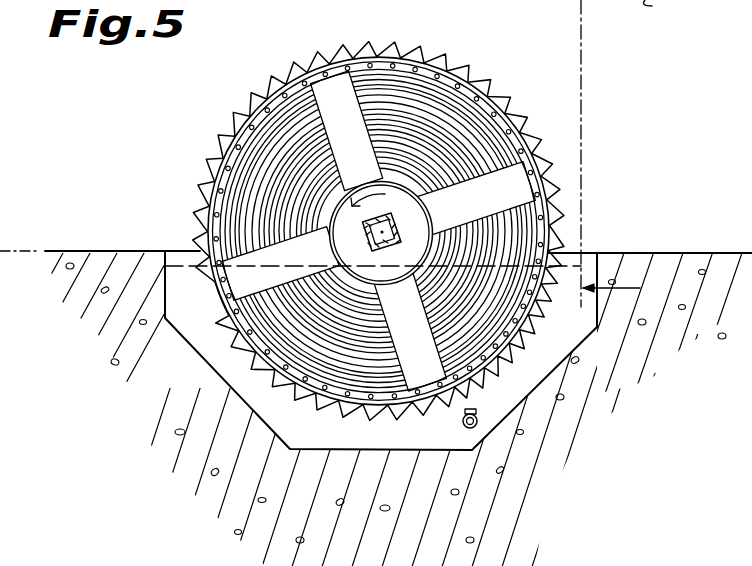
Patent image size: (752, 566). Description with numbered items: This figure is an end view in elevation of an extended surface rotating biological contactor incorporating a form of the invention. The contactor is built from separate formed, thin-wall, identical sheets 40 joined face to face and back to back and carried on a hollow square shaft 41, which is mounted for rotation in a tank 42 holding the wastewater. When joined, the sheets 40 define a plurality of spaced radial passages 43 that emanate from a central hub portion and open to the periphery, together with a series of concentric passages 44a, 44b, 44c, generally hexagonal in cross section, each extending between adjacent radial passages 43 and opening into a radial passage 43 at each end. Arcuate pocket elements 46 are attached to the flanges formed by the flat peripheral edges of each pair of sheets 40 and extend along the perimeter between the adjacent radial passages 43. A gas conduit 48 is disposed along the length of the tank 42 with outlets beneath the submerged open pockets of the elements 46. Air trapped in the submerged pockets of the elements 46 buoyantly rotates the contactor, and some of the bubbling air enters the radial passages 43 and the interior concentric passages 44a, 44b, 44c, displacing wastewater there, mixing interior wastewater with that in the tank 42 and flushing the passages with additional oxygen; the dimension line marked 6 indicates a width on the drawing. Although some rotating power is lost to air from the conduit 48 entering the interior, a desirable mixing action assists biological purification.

The cutting wheel width / slit 6 is at (618, 289).
The sheets 40 is at (420, 226).
The hollow square shaft 41 is at (373, 252).
The tank 42 is at (630, 252).
The radial passages 43 is at (328, 88).
The concentric passage 44a is at (428, 87).
The concentric passage 44b is at (433, 118).
The concentric passage 44c is at (425, 153).
The arcuate pocket elements 46 is at (234, 126).
The gas conduit 48 is at (461, 424).